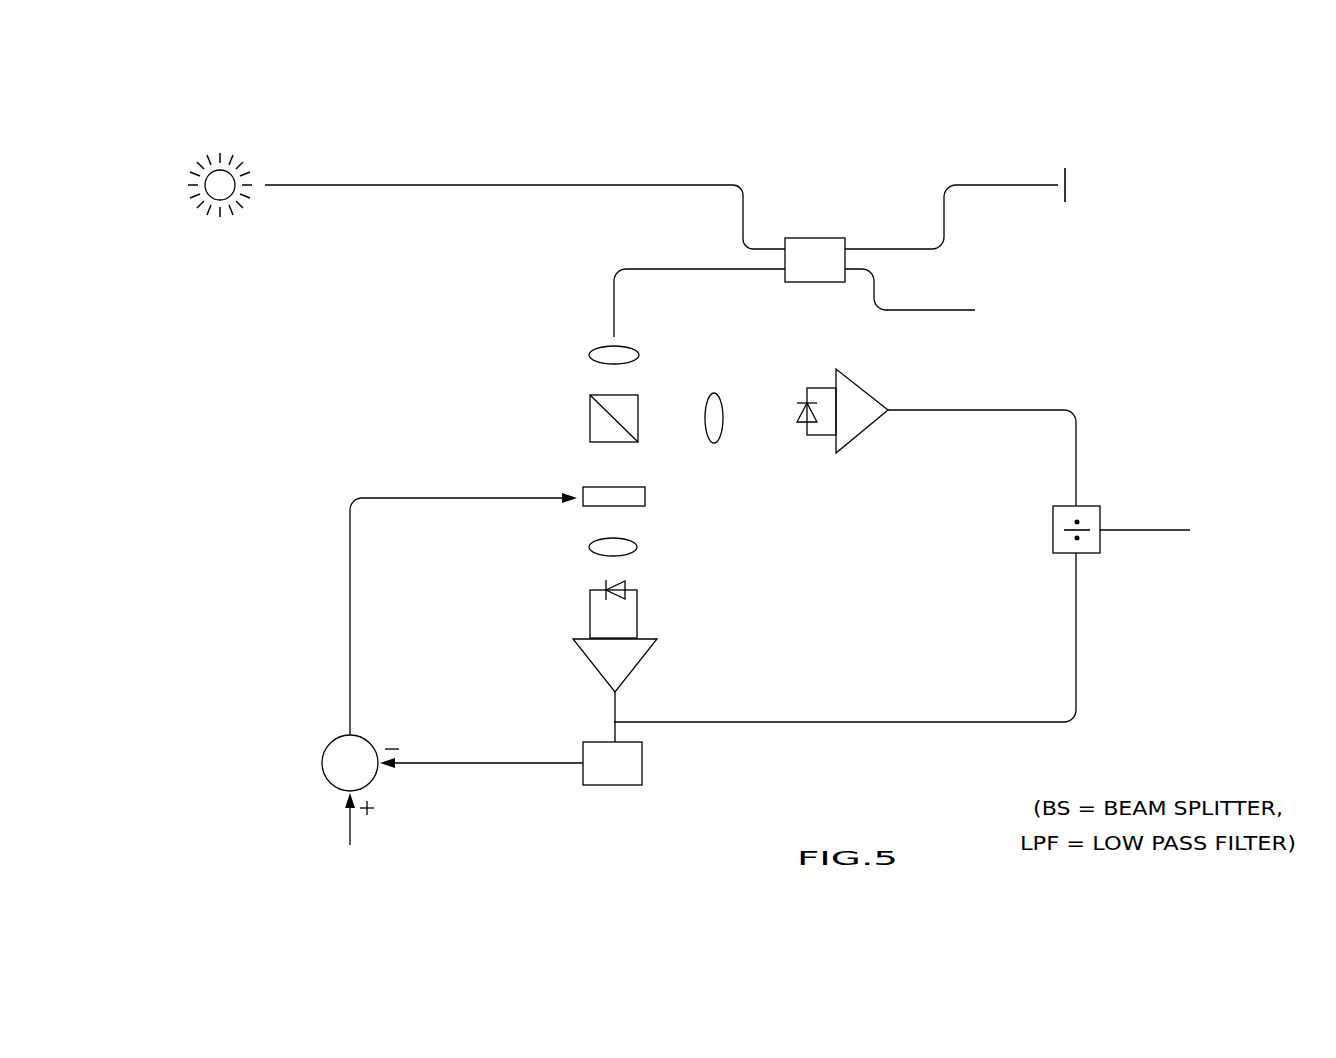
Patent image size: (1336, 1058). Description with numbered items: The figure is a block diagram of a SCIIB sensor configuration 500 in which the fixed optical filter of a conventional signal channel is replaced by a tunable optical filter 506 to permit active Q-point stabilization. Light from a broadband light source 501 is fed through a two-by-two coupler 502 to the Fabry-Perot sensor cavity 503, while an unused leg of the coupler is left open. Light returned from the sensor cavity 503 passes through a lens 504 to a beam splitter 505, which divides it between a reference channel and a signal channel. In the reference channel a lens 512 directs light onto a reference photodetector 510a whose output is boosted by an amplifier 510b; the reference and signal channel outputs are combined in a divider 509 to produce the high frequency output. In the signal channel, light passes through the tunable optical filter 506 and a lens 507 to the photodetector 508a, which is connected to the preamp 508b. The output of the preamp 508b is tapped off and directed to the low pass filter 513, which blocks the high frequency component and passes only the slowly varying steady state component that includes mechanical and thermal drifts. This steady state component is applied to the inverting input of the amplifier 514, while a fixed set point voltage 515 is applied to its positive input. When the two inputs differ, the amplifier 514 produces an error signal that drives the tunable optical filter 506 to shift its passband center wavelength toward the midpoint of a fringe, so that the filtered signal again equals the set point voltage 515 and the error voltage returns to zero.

The SCIIB sensor configuration 500 is at (1150, 103).
The broadband light source 501 is at (209, 138).
The 2x2 coupler 502 is at (814, 238).
The sensor cavity 503 is at (1088, 216).
The lens 504 is at (590, 352).
The beam splitter 505 is at (598, 422).
The tunable optical filter 506 is at (600, 492).
The lens 507 is at (590, 547).
The photodetector 508a is at (626, 583).
The preamp 508b is at (628, 660).
The divider 509 is at (1103, 553).
The reference photodetector 510a is at (793, 388).
The reference amplifier 510b is at (860, 428).
The lens 512 is at (714, 393).
The low pass filter 513 is at (620, 786).
The amplifier 514 is at (323, 760).
The set point voltage 515 is at (326, 884).